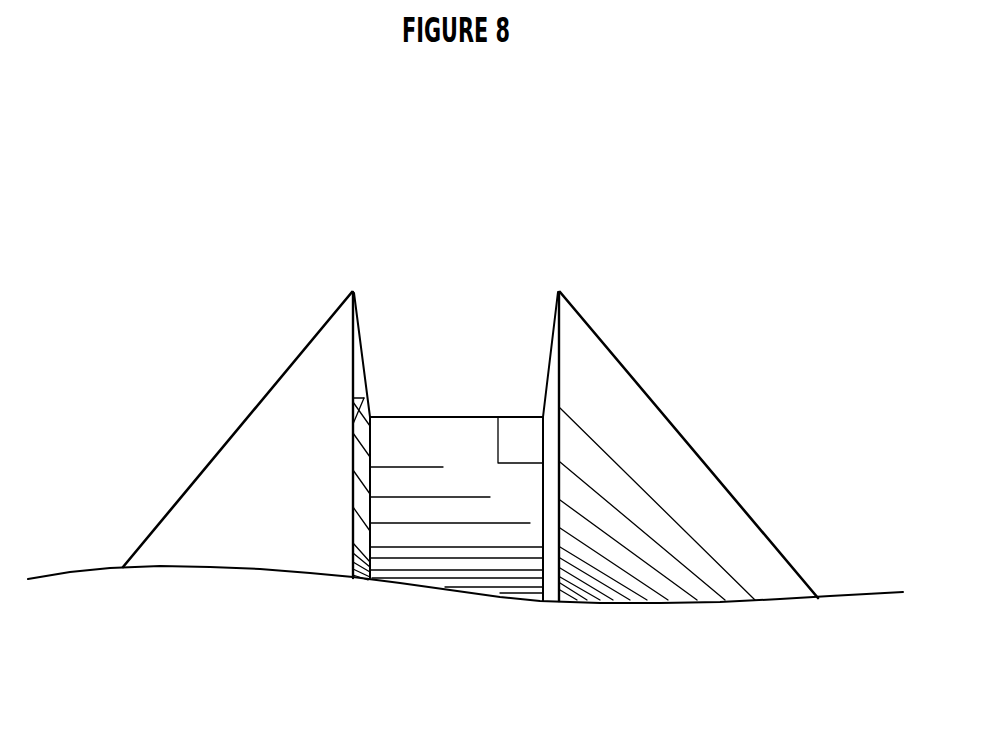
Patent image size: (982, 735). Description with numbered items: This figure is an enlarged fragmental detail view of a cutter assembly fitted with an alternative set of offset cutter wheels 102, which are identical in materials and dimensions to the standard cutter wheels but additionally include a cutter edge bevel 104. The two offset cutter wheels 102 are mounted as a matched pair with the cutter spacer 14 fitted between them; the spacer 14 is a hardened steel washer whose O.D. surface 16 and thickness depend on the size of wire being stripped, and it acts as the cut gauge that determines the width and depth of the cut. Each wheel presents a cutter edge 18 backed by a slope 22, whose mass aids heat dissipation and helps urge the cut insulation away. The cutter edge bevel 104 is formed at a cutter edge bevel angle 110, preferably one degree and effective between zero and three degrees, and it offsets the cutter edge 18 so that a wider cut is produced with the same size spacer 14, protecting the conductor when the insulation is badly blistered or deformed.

The cutter spacer 14 is at (455, 493).
The O.D. surface 16 is at (543, 463).
The cutter edge 18 is at (351, 294).
The slope 22 is at (148, 533).
The offset cutter wheels 102 is at (258, 503).
The cutter edge bevel 104 is at (362, 332).
The cutter edge bevel angle 110 is at (196, 489).